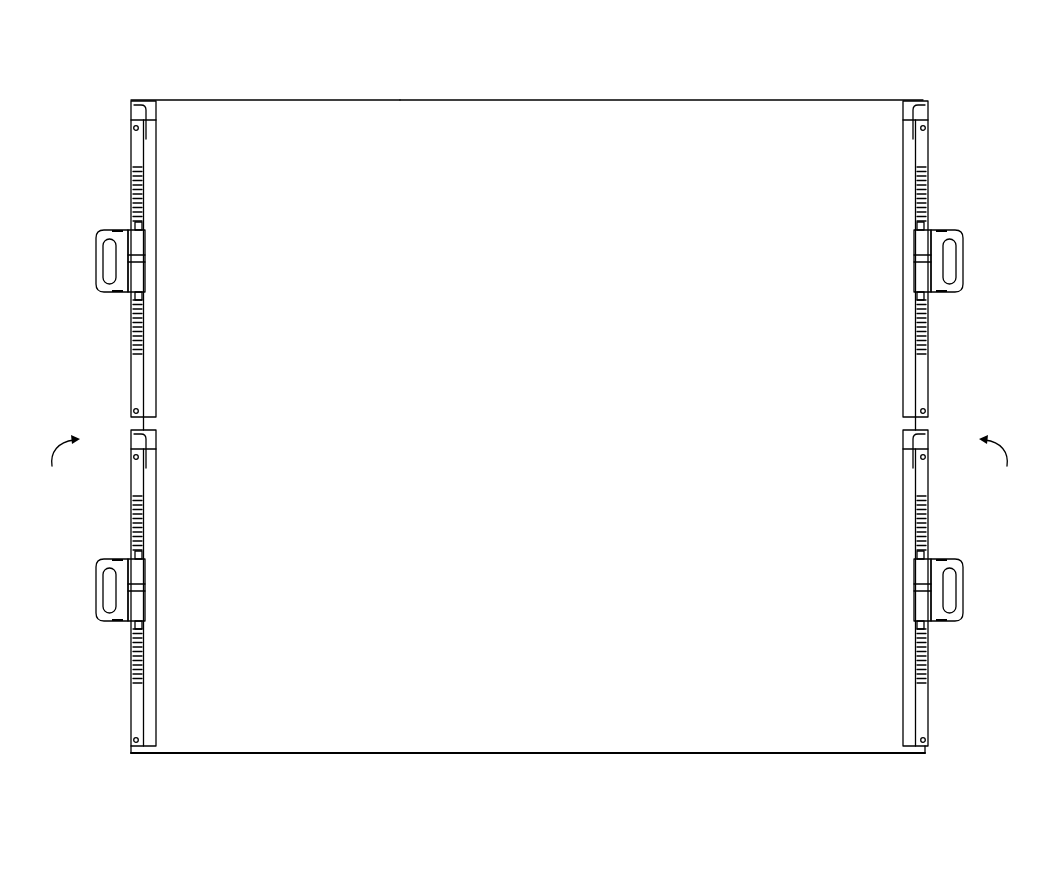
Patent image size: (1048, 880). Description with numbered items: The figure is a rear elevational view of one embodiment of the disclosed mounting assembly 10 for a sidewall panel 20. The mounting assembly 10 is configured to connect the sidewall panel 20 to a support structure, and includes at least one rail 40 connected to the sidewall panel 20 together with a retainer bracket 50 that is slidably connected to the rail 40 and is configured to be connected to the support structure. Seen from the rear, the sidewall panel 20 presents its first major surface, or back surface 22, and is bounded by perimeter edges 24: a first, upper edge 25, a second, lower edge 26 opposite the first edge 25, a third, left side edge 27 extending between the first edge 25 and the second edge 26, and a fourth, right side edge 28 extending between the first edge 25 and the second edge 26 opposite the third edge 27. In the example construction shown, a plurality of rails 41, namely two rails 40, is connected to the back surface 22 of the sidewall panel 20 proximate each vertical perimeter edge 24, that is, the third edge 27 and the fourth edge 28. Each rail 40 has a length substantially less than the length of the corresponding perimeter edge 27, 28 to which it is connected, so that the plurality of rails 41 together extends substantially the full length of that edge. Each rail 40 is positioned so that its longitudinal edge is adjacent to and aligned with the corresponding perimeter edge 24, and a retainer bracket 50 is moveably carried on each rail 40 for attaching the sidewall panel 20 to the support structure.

The mounting assembly 10 is at (958, 88).
The sidewall panel 20 is at (760, 92).
The first major surface 22 is at (866, 156).
The perimeter edge 24 is at (213, 99).
The first edge 25 is at (545, 99).
The second edge 26 is at (300, 755).
The third edge 27 is at (922, 425).
The fourth edge 28 is at (138, 425).
The rail 40 is at (130, 333).
The plurality of rails 41 is at (534, 462).
The retainer bracket 50 is at (97, 257).